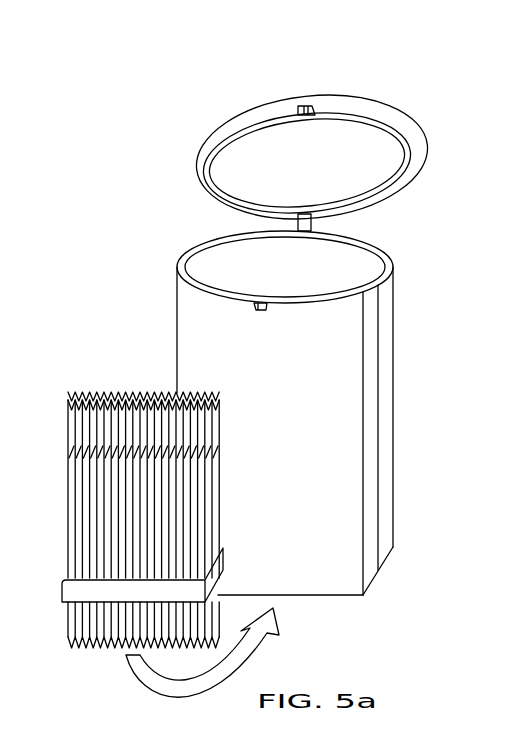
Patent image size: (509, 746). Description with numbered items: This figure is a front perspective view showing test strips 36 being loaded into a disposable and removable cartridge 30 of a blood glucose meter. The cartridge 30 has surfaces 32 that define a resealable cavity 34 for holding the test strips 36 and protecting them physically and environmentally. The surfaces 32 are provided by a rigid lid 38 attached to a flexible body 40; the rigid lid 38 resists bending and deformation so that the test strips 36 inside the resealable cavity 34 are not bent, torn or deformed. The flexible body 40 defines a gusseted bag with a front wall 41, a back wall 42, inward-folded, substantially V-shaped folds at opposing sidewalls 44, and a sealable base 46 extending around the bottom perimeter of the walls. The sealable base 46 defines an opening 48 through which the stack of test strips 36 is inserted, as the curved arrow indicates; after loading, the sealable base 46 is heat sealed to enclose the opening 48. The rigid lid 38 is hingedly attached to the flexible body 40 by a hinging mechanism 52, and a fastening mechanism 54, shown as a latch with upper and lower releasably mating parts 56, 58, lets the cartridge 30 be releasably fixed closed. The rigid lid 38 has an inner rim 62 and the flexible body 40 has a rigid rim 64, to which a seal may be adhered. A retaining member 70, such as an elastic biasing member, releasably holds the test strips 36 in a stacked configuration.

The disposable and removable cartridge 30 is at (337, 133).
The surfaces 32 is at (362, 276).
The resealable cavity 34 is at (372, 262).
The test strips 36 is at (214, 456).
The rigid lid 38 is at (426, 152).
The flexible body 40 is at (302, 431).
The front wall 41 is at (185, 358).
The back wall 42 is at (396, 508).
The opposing sidewalls 44 is at (393, 548).
The sealable base 46 is at (374, 583).
The opening 48 is at (358, 608).
The hinging mechanism 52 is at (302, 214).
The fastening mechanism 54 is at (290, 98).
The upper releasably mating part 56 is at (308, 104).
The lower releasably mating part 58 is at (257, 312).
The inner rim 62 is at (407, 158).
The rigid rim 64 is at (176, 270).
The retaining member 70 is at (224, 566).